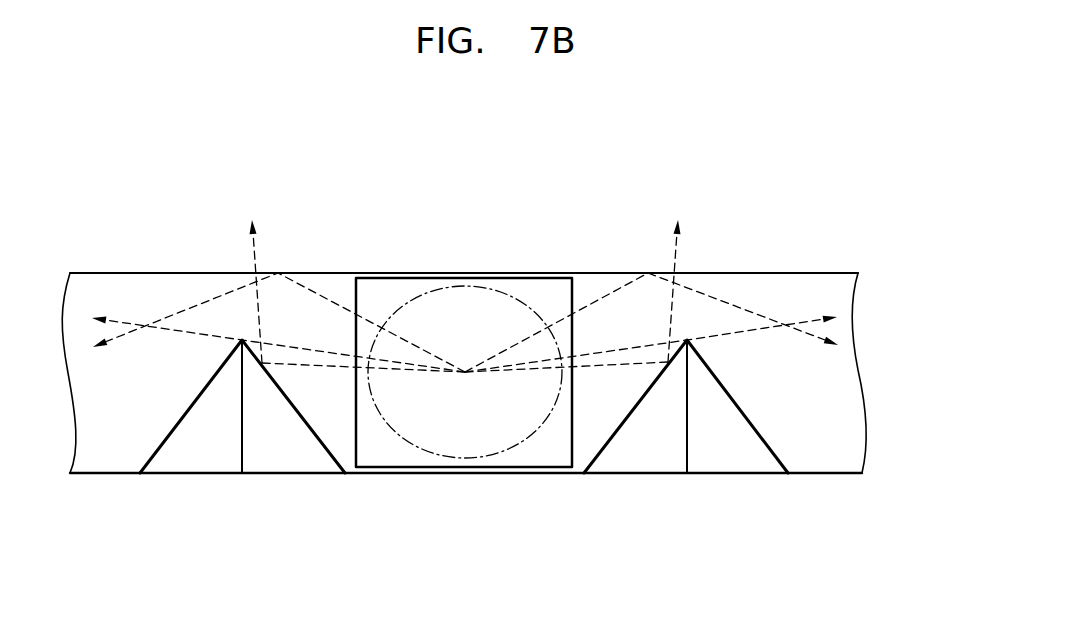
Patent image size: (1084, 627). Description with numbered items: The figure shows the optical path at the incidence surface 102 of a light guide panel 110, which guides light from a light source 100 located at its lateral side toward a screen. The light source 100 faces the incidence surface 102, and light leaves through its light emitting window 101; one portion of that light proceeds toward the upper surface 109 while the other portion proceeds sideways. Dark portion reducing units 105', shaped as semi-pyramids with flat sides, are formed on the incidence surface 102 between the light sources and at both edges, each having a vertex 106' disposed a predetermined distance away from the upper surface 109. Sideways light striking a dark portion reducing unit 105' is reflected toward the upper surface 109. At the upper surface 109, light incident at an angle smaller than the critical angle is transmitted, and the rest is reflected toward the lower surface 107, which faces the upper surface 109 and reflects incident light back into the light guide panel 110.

The light source 100 is at (538, 280).
The light emitting window 101 is at (513, 447).
The incidence surface 102 is at (835, 403).
The dark portion reducing unit 105' is at (242, 449).
The vertex 106' is at (206, 343).
The lower surface 107 is at (805, 473).
The upper surface 109 is at (805, 273).
The light guide panel 110 is at (746, 228).